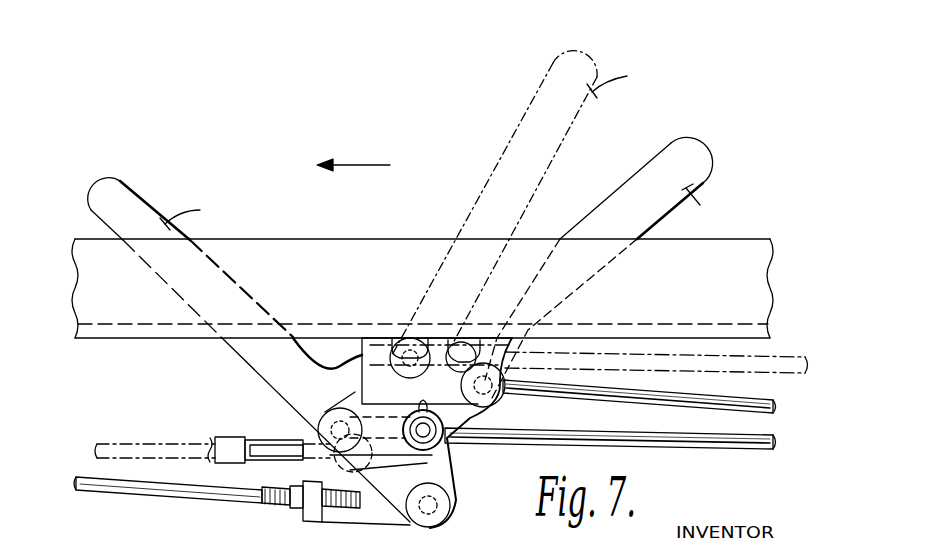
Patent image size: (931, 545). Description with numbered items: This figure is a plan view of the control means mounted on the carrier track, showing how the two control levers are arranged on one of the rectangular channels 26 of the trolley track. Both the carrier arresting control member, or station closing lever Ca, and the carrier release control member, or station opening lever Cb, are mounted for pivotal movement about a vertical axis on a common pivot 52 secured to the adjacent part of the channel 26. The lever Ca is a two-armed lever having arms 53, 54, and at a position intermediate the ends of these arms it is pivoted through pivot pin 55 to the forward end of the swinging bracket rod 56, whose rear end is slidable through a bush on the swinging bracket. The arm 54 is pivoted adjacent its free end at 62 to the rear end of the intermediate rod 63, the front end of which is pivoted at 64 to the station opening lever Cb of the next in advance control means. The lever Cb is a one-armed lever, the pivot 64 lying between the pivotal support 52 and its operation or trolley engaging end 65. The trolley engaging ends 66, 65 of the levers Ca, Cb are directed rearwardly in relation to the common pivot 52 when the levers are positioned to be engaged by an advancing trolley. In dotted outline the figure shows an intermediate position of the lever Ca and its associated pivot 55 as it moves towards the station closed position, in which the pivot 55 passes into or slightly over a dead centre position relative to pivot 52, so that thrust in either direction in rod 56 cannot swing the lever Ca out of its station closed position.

The rectangular channel 26 is at (332, 243).
The trolley engaging end 66 is at (118, 188).
The carrier arresting control member Ca is at (407, 149).
The trolley engaging end 65 is at (675, 148).
The carrier release control member Cb is at (703, 202).
The pivot 64 is at (512, 338).
The pivot pin 55 is at (410, 345).
The arm 53 is at (260, 357).
The common pivot 52 is at (446, 438).
The arm 54 is at (448, 483).
The pivot 62 is at (440, 512).
The intermediate rod 63 is at (172, 437).
The swinging bracket rod 56 is at (770, 365).